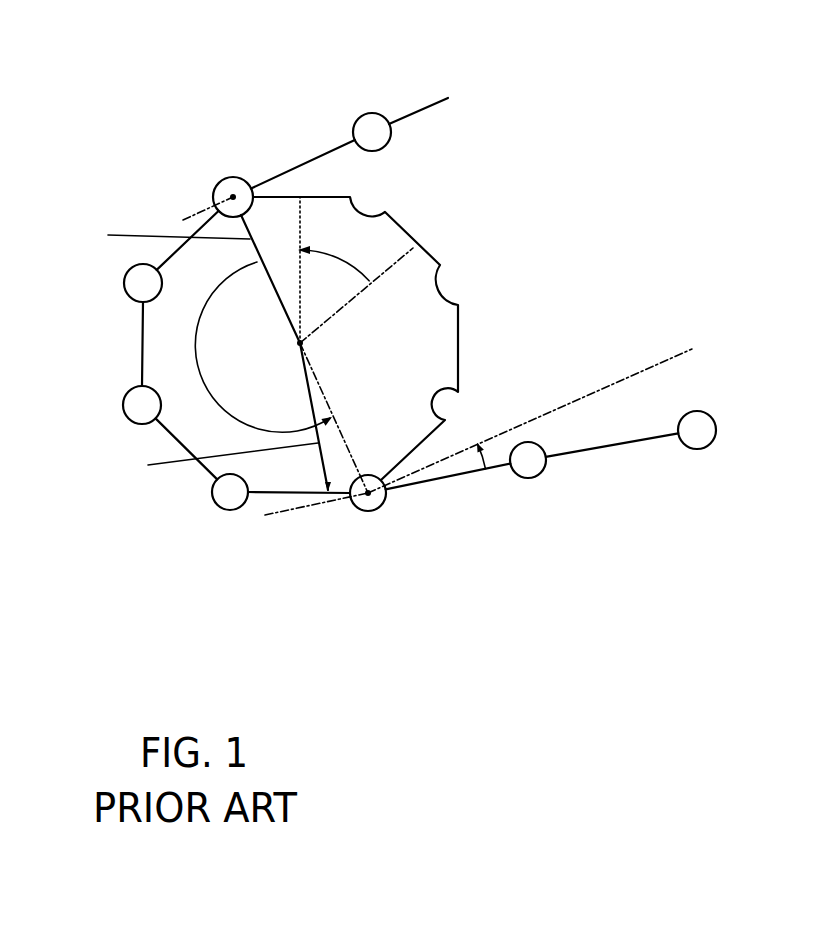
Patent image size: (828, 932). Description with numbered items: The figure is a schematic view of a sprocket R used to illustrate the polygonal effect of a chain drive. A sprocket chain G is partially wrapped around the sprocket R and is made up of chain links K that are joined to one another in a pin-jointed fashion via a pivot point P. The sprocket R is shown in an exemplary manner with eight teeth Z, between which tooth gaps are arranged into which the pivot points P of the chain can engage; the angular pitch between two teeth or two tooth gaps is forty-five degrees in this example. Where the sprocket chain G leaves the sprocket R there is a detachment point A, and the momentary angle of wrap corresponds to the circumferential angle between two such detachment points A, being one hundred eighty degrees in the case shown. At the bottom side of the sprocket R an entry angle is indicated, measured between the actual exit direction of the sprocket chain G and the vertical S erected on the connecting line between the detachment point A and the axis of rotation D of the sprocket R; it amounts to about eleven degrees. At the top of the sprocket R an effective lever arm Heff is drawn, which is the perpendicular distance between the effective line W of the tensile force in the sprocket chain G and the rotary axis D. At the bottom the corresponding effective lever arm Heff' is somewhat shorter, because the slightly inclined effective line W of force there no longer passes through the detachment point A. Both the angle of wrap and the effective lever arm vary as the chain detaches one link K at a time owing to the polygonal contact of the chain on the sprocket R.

The teeth Z is at (458, 344).
The detachment point A is at (233, 197).
The sprocket chain G is at (302, 142).
The pivot point P is at (373, 115).
The chain link K is at (617, 447).
The effective line of force W is at (193, 212).
The vertical S is at (678, 357).
The axis of rotation D is at (300, 343).
The sprocket R is at (438, 260).
The effective lever arm Heff is at (145, 237).
The effective lever arm Heff' is at (205, 467).